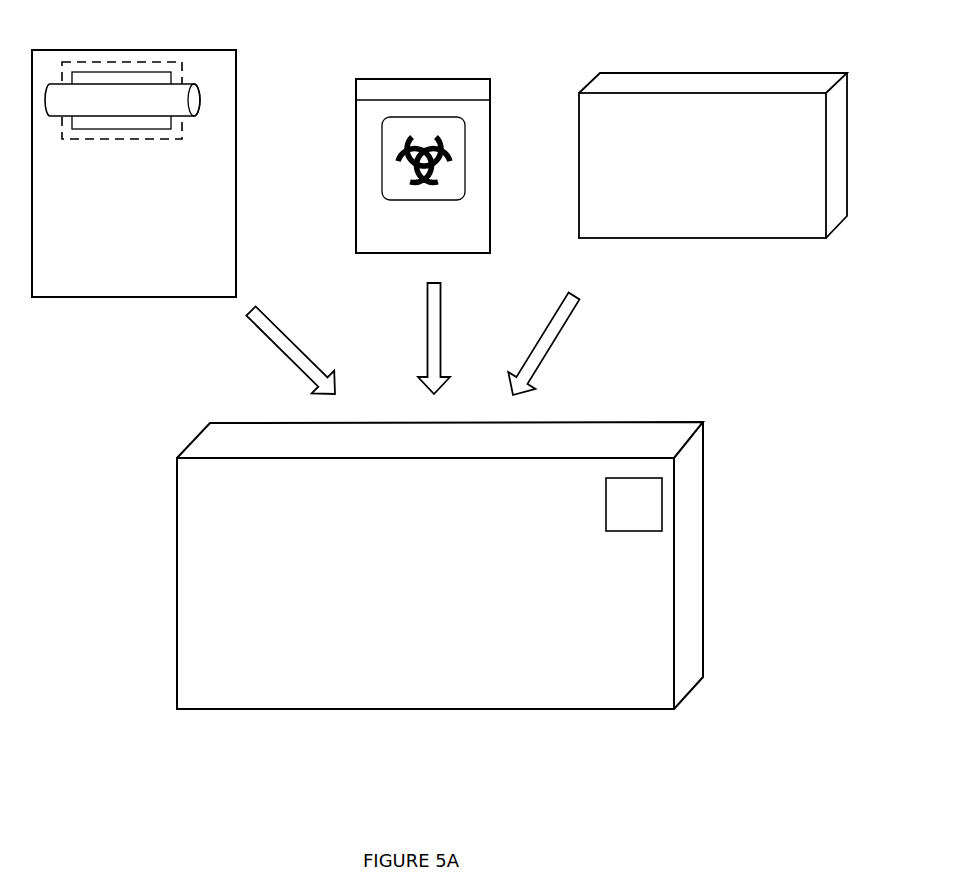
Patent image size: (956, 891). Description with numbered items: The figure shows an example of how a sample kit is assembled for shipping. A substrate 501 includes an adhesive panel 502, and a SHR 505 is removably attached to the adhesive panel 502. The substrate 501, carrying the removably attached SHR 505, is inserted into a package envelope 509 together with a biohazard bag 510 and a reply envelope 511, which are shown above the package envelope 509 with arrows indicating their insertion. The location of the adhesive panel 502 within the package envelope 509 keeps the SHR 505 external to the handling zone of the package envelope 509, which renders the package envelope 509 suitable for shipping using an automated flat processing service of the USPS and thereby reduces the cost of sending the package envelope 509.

The substrate 501 is at (192, 284).
The adhesive panel 502 is at (193, 158).
The SHR 505 is at (159, 112).
The package envelope 509 is at (378, 721).
The biohazard bag 510 is at (440, 244).
The reply envelope 511 is at (684, 69).